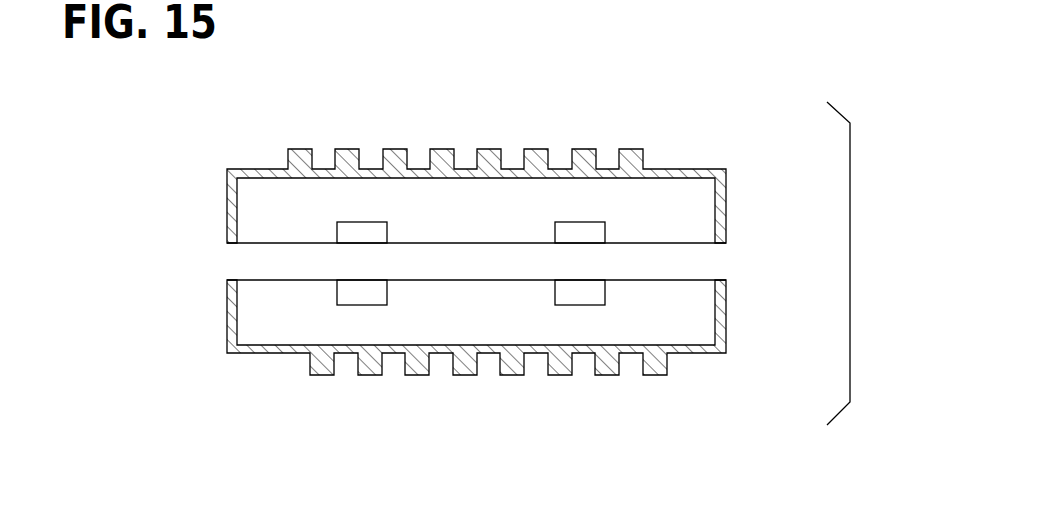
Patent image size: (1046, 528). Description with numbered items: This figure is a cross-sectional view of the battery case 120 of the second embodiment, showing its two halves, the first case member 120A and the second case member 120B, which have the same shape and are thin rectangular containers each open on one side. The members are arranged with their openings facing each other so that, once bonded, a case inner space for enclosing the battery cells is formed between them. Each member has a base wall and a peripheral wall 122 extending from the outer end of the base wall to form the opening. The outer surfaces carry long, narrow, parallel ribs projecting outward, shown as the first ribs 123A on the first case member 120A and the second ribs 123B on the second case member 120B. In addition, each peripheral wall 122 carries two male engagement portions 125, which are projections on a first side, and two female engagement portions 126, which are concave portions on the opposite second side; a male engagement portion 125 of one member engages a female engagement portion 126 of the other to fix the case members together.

The battery case 120 is at (215, 250).
The first case member 120A is at (229, 169).
The second case member 120B is at (243, 354).
The peripheral wall 122 is at (303, 217).
The first ribs 123A is at (420, 168).
The second ribs 123B is at (444, 356).
The male engagement portion 125 is at (362, 222).
The female engagement portion 126 is at (362, 305).